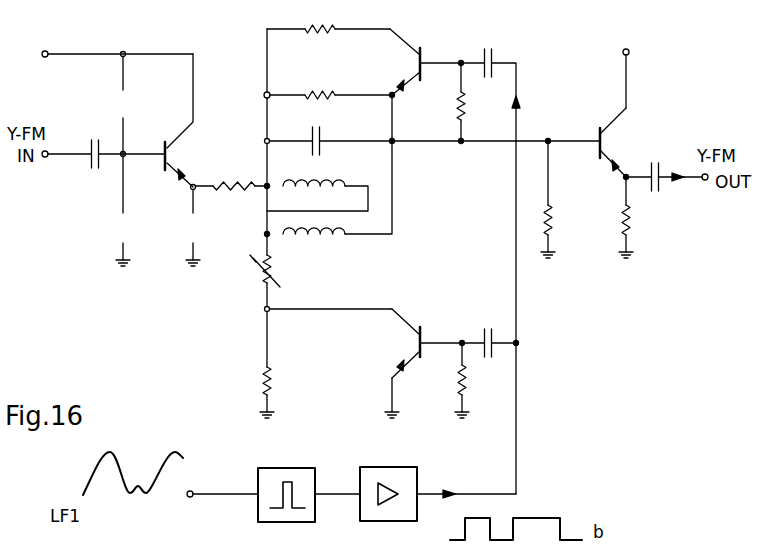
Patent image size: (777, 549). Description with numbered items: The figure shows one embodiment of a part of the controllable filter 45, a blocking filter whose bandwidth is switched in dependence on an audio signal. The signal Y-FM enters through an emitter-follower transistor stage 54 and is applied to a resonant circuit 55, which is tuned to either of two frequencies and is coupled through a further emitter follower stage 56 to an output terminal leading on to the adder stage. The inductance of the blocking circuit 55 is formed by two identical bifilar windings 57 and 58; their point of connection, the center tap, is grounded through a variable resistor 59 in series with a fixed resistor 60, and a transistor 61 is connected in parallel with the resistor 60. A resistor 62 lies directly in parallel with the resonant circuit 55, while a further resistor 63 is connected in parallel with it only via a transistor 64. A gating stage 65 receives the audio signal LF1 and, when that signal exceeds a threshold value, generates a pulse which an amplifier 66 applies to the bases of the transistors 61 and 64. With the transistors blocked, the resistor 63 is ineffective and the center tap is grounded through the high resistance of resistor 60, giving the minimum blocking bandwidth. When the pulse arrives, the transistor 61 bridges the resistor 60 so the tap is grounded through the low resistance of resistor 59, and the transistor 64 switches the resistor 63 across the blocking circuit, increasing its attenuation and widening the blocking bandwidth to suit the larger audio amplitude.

The controllable filter 45 is at (264, 96).
The emitter-follower transistor stage 54 is at (172, 153).
The resonant circuit 55 is at (282, 157).
The further emitter follower stage 56 is at (616, 127).
The winding 57 is at (345, 168).
The winding 58 is at (333, 238).
The variable resistor 59 is at (277, 268).
The fixed resistor 60 is at (282, 381).
The transistor 61 is at (410, 345).
The resistor 62 is at (313, 93).
The further resistor 63 is at (326, 31).
The transistor 64 is at (412, 66).
The gating stage 65 is at (305, 467).
The amplifier 66 is at (374, 472).